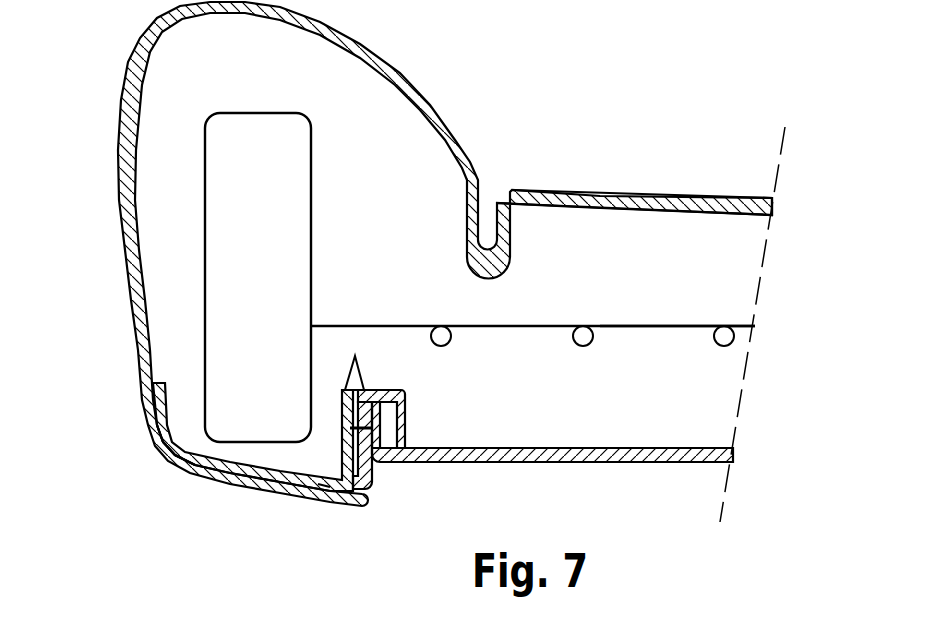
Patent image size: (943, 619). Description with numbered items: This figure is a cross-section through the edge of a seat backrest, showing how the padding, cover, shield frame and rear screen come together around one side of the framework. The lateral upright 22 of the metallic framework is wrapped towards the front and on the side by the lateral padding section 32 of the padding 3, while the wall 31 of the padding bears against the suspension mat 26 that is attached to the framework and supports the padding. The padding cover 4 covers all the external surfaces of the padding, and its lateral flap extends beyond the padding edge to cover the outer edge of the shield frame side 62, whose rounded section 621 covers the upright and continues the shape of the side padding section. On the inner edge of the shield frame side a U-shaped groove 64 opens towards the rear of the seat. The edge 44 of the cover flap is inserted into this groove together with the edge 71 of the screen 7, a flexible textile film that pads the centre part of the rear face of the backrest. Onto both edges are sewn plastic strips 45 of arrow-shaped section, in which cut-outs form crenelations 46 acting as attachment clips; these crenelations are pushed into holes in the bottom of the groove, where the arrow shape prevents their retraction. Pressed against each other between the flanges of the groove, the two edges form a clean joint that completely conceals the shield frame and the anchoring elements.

The padding 3 is at (373, 127).
The padding cover 4 is at (617, 197).
The screen 7 is at (598, 455).
The lateral upright 22 is at (222, 276).
The suspension mat 26 is at (722, 347).
The wall 31 is at (708, 267).
The lateral padding section 32 is at (168, 187).
The edge of the flaps 44 is at (370, 472).
The plastic strip 45 is at (400, 428).
The crenelation 46 is at (345, 372).
The shield frame side 62 is at (330, 518).
The rounded section 621 is at (175, 456).
The U-shaped groove 64 is at (376, 392).
The edge of the screen 71 is at (382, 437).